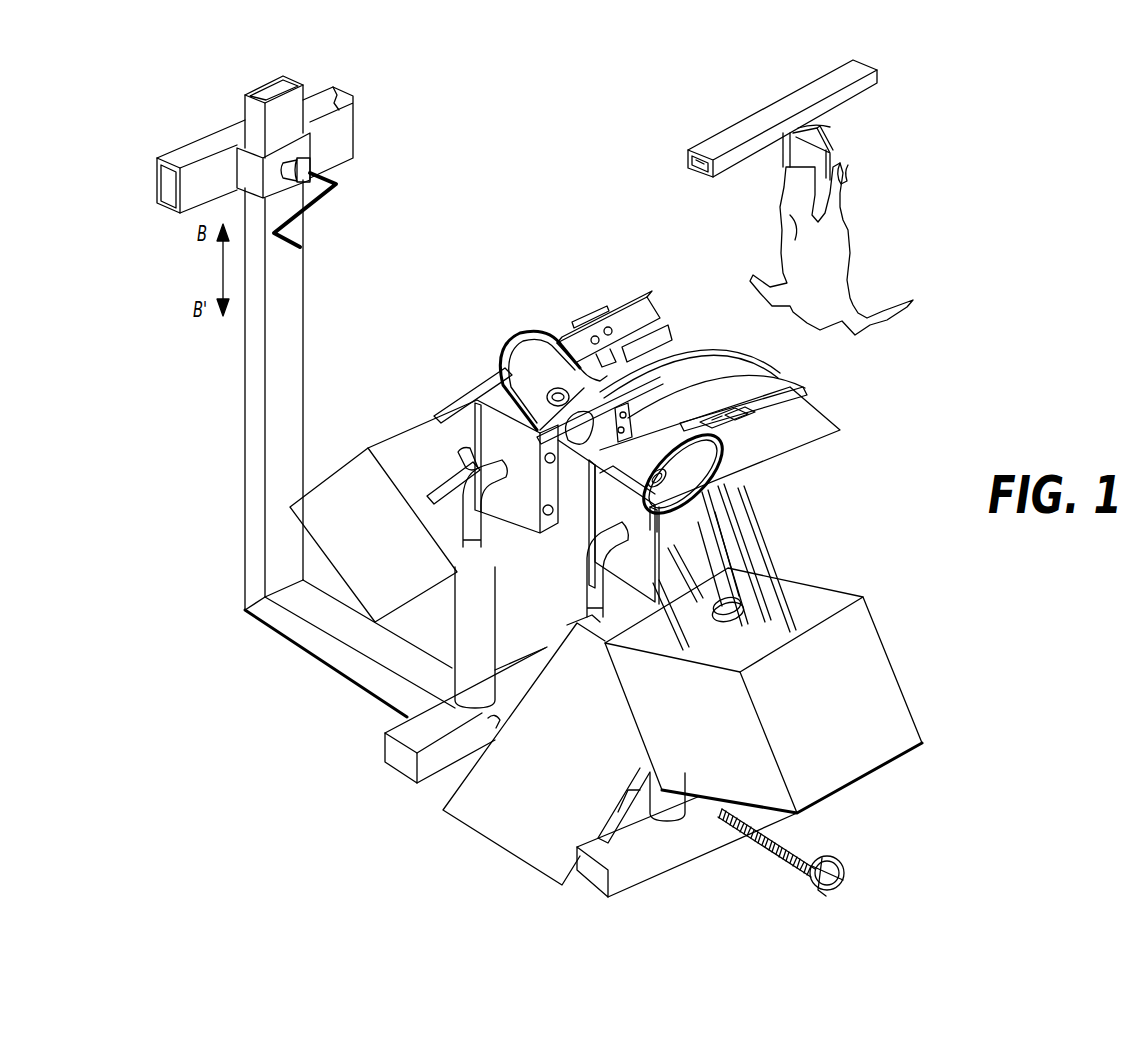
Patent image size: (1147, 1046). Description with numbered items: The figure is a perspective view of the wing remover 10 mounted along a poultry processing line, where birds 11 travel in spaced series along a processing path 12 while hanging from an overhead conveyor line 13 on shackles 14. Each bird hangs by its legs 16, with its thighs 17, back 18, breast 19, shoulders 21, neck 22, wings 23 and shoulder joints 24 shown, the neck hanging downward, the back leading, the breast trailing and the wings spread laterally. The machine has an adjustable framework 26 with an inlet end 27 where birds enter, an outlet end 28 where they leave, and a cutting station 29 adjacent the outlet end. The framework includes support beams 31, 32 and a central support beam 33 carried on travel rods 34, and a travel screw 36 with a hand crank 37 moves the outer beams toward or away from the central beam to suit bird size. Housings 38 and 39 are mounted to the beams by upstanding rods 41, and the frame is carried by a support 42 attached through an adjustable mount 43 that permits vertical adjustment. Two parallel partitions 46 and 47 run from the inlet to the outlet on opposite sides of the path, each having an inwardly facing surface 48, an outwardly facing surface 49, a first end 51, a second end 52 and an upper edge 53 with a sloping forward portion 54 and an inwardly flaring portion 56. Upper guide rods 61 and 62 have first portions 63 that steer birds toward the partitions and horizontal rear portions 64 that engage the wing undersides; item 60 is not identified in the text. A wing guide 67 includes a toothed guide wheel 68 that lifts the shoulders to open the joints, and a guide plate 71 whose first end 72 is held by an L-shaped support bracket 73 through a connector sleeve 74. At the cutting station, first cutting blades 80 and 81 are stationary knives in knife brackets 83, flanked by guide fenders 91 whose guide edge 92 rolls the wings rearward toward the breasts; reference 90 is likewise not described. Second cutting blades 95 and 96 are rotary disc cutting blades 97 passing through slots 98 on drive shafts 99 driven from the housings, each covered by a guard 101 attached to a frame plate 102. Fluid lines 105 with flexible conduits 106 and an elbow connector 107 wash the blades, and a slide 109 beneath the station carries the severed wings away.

The wing remover 10 is at (986, 668).
The birds 11 is at (880, 236).
The processing path 12 is at (919, 246).
The overhead conveyor line 13 is at (781, 108).
The shackles 14 is at (833, 138).
The legs 16 is at (783, 172).
The thighs 17 is at (850, 181).
The back 18 is at (820, 271).
The breast 19 is at (782, 248).
The shoulders 21 is at (786, 283).
The neck 22 is at (842, 326).
The wings 23 is at (730, 272).
The shoulder joints 24 is at (774, 350).
The adjustable framework 26 is at (438, 788).
The inlet end 27 is at (843, 403).
The outlet end 28 is at (567, 560).
The cutting station 29 is at (462, 420).
The support beam 31 is at (396, 760).
The support beam 32 is at (577, 885).
The central support beam 33 is at (648, 760).
The travel rods 34 is at (626, 810).
The travel screw 36 is at (772, 856).
The hand crank 37 is at (846, 866).
The housing 38 is at (392, 591).
The housing 39 is at (714, 744).
The upstanding rods 41 is at (712, 865).
The support 42 is at (288, 346).
The adjustable mount 43 is at (318, 166).
The partition 46 is at (712, 348).
The partition 47 is at (842, 416).
The inwardly facing surface 48 is at (718, 381).
The outwardly facing surface 49 is at (752, 438).
The first end 51 is at (770, 366).
The second end 52 is at (530, 480).
The upper edge 53 is at (548, 423).
The forward portion 54 is at (760, 346).
The flaring portion 56 is at (522, 437).
The cutter assembly 60 is at (620, 297).
The upper guide rod 61 is at (750, 445).
The upper guide rod 62 is at (668, 338).
The first portions 63 is at (655, 330).
The rear portions 64 is at (540, 298).
The wing guide 67 is at (641, 345).
The guide wheel 68 is at (690, 356).
The guide plate 71 is at (556, 346).
The first end 72 is at (582, 258).
The support brackets 73 is at (790, 580).
The connector sleeves 74 is at (770, 408).
The first cutting blade 80 is at (546, 445).
The first cutting blade 81 is at (622, 442).
The knife brackets 83 is at (582, 455).
The pin 90 is at (656, 398).
The guide fenders 91 is at (586, 378).
The guide edge 92 is at (568, 396).
The second cutting blade 95 is at (480, 366).
The second cutting blade 96 is at (758, 490).
The rotary disc cutting blades 97 is at (520, 376).
The slots 98 is at (548, 538).
The drive shafts 99 is at (712, 630).
The guard 101 is at (500, 381).
The frame plate 102 is at (650, 576).
The fluid lines 105 is at (462, 535).
The flexible conduits 106 is at (580, 603).
The elbow connector 107 is at (466, 478).
The slide 109 is at (580, 764).